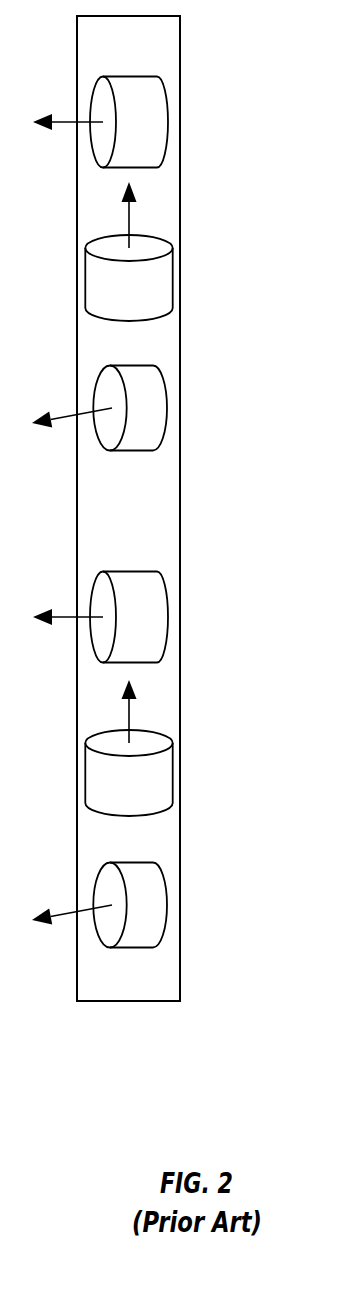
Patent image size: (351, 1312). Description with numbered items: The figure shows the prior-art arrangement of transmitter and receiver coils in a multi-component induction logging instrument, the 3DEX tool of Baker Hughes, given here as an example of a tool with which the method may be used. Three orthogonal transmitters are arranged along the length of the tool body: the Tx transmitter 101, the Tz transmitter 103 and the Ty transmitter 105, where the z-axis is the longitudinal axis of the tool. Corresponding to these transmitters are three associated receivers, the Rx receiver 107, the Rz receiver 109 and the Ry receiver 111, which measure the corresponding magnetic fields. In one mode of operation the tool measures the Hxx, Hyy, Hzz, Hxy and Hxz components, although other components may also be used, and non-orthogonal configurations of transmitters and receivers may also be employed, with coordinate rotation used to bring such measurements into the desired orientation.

The Tx transmitter 101 is at (215, 123).
The Tz transmitter 103 is at (215, 279).
The Ty transmitter 105 is at (215, 407).
The Rx receiver 107 is at (215, 618).
The Rz receiver 109 is at (215, 777).
The Ry receiver 111 is at (215, 905).